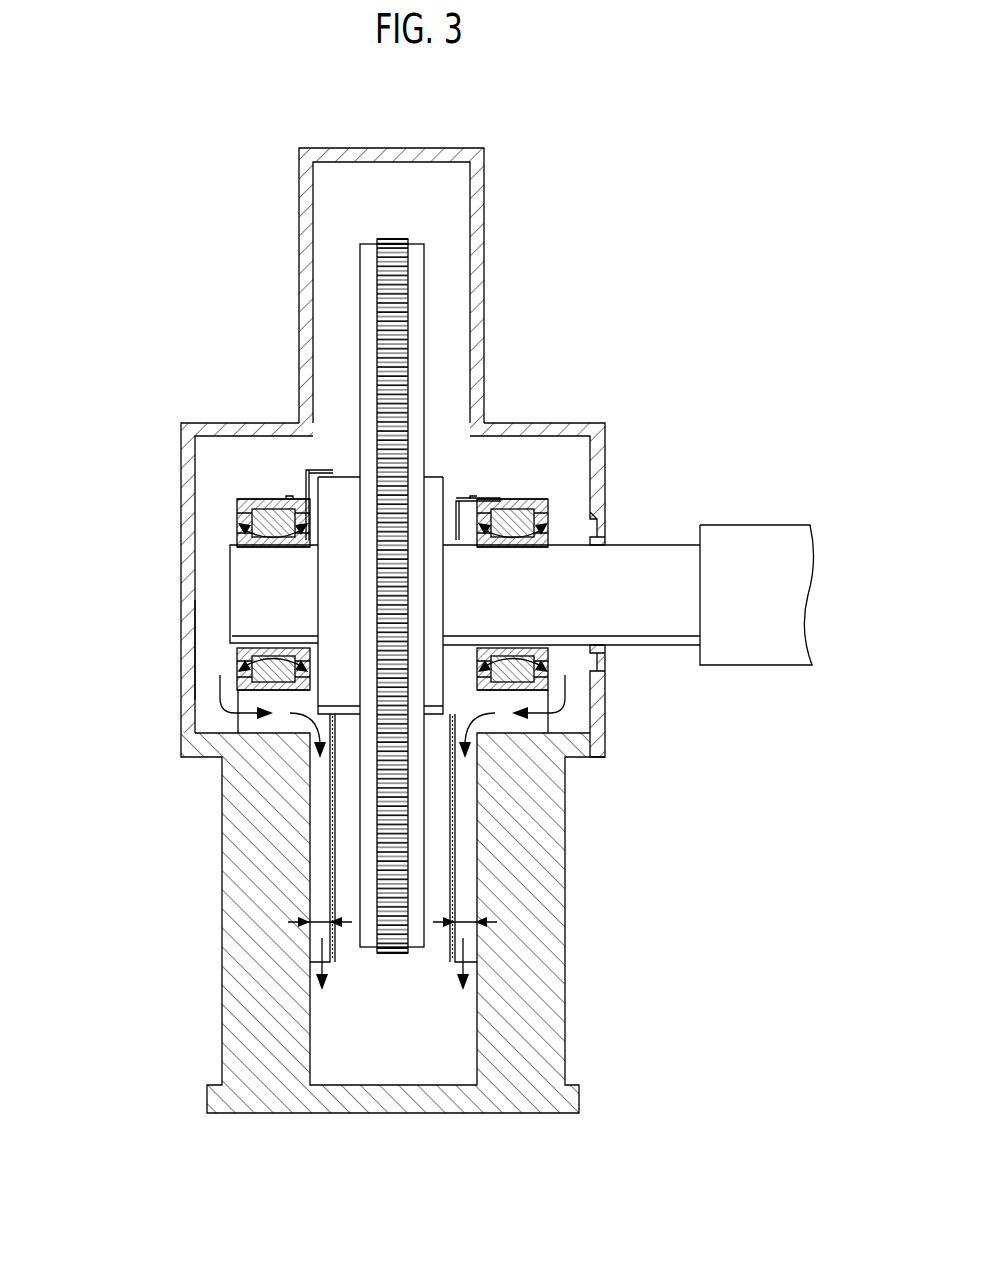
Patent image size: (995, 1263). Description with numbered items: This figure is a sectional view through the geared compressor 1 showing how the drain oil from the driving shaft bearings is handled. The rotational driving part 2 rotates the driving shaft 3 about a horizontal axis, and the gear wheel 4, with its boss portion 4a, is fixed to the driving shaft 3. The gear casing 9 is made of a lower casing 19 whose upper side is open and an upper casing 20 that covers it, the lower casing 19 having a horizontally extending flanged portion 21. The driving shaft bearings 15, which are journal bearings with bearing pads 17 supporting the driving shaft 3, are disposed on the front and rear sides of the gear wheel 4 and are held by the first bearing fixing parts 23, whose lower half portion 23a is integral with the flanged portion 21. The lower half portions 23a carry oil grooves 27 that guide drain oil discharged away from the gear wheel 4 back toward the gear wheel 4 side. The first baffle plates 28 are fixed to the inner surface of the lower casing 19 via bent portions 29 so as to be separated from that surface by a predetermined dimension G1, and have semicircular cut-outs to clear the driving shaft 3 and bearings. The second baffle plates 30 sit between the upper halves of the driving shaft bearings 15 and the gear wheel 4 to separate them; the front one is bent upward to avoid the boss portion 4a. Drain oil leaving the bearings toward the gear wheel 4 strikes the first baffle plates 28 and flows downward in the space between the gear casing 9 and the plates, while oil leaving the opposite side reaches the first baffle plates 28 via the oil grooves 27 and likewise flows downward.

The geared compressor 1 is at (626, 172).
The rotational driving part 2 is at (748, 536).
The driving shaft 3 is at (647, 556).
The gear wheel 4 is at (400, 290).
The boss portion 4a is at (345, 482).
The gear casing 9 is at (170, 470).
The driving shaft bearings 15 is at (236, 522).
The bearing pads 17 is at (256, 561).
The lower casing 19 is at (241, 946).
The upper casing 20 is at (306, 283).
The flanged portion 21 is at (191, 632).
The first bearing fixing parts 23 is at (265, 498).
The bearing fixing part lower half portion 23a is at (249, 684).
The oil grooves 27 is at (211, 716).
The first baffle plates 28 is at (331, 825).
The bent portions 29 is at (322, 870).
The second baffle plates 30 is at (303, 480).
The predetermined dimension G1 is at (323, 924).